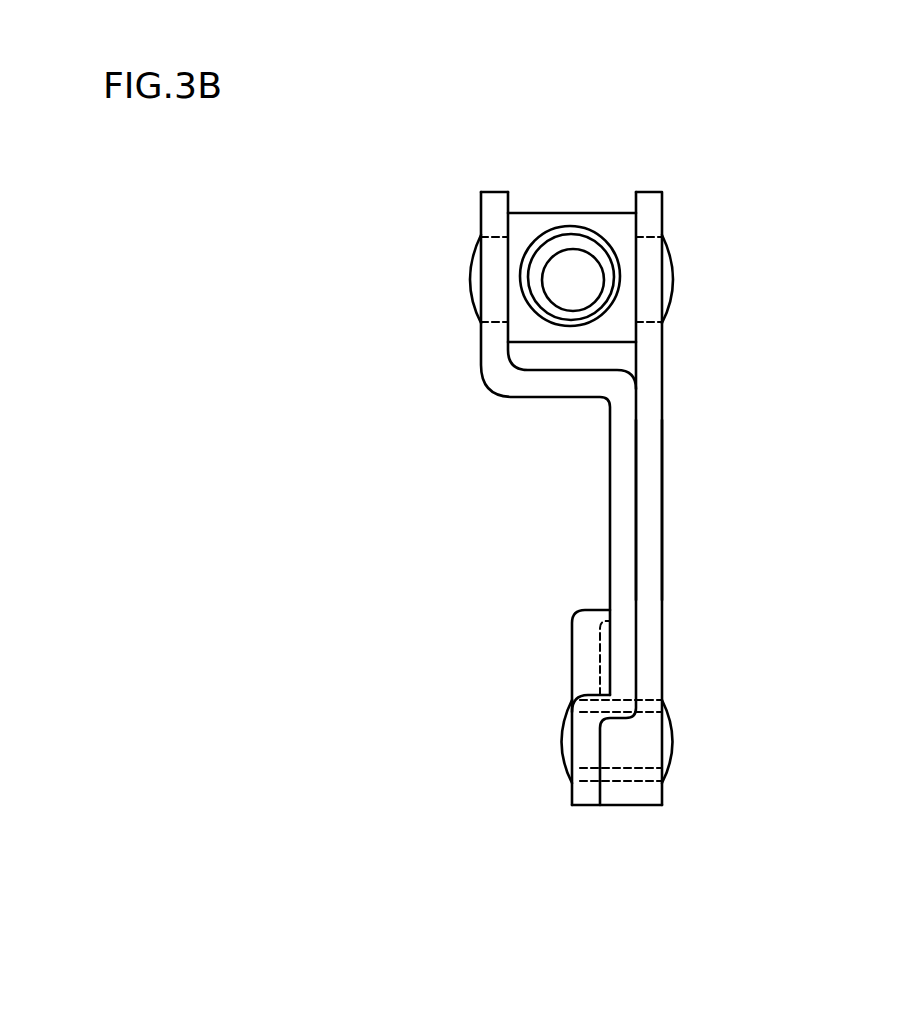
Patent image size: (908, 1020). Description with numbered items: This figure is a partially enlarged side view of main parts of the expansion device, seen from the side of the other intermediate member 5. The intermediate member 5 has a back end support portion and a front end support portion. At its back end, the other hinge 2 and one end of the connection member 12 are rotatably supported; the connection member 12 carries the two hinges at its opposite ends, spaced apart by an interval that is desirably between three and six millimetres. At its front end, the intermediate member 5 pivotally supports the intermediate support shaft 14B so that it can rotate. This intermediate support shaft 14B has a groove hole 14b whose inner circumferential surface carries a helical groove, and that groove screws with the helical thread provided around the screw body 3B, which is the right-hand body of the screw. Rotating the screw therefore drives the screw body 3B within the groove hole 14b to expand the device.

The intermediate support shaft 14B is at (556, 213).
The screw body 3B is at (582, 263).
The groove hole 14b is at (617, 293).
The intermediate member 5 is at (663, 528).
The hinge 2 is at (672, 742).
The connection member 12 is at (611, 805).